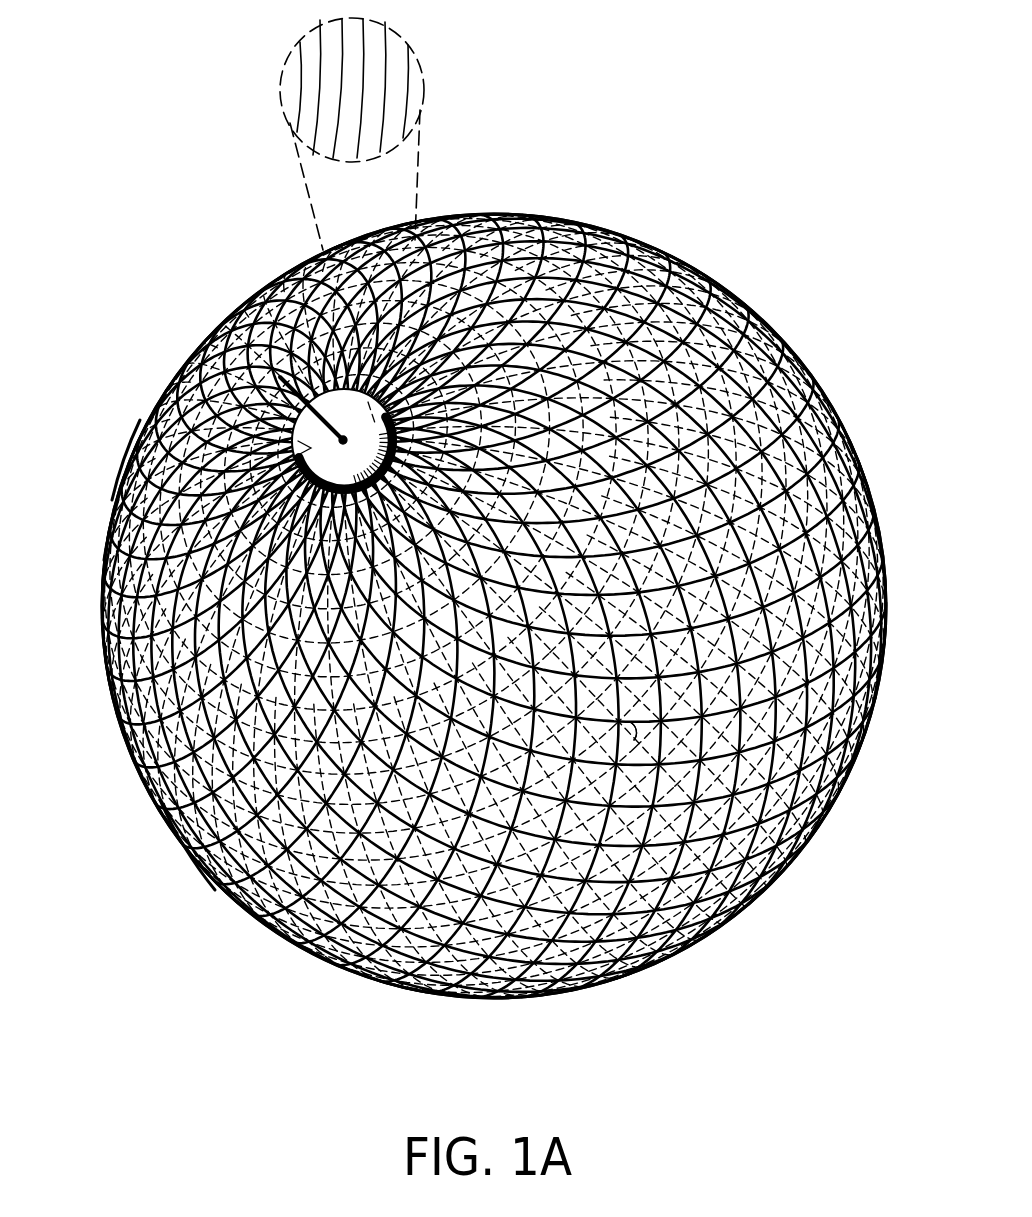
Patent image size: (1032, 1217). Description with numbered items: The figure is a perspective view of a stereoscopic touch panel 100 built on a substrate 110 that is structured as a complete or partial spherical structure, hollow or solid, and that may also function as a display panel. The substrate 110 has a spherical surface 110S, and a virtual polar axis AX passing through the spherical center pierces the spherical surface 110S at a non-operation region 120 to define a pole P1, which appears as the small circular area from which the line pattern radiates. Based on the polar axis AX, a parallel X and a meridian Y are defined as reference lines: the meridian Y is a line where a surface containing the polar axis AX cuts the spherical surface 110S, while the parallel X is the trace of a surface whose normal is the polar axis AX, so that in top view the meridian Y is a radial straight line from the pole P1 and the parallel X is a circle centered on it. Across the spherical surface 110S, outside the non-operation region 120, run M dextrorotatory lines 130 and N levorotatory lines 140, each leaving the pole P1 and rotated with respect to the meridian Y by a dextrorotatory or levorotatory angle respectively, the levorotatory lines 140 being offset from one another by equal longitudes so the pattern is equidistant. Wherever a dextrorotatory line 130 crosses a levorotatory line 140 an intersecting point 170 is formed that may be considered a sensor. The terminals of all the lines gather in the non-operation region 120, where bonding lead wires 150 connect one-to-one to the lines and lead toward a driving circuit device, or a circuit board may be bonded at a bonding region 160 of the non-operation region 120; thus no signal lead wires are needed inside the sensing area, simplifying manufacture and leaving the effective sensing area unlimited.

The stereoscopic touch panel 100 is at (813, 1027).
The substrate 110 is at (854, 452).
The spherical surface 110S is at (787, 408).
The non-operation region 120 is at (152, 437).
The dextrorotatory lines 130 is at (147, 690).
The levorotatory lines 140 is at (582, 267).
The bonding lead wires 150 is at (290, 78).
The bonding region 160 is at (113, 515).
The intersecting point 170 is at (185, 850).
The pole P1 is at (340, 436).
The polar axis AX is at (280, 377).
The parallel X is at (822, 551).
The meridian Y is at (858, 587).